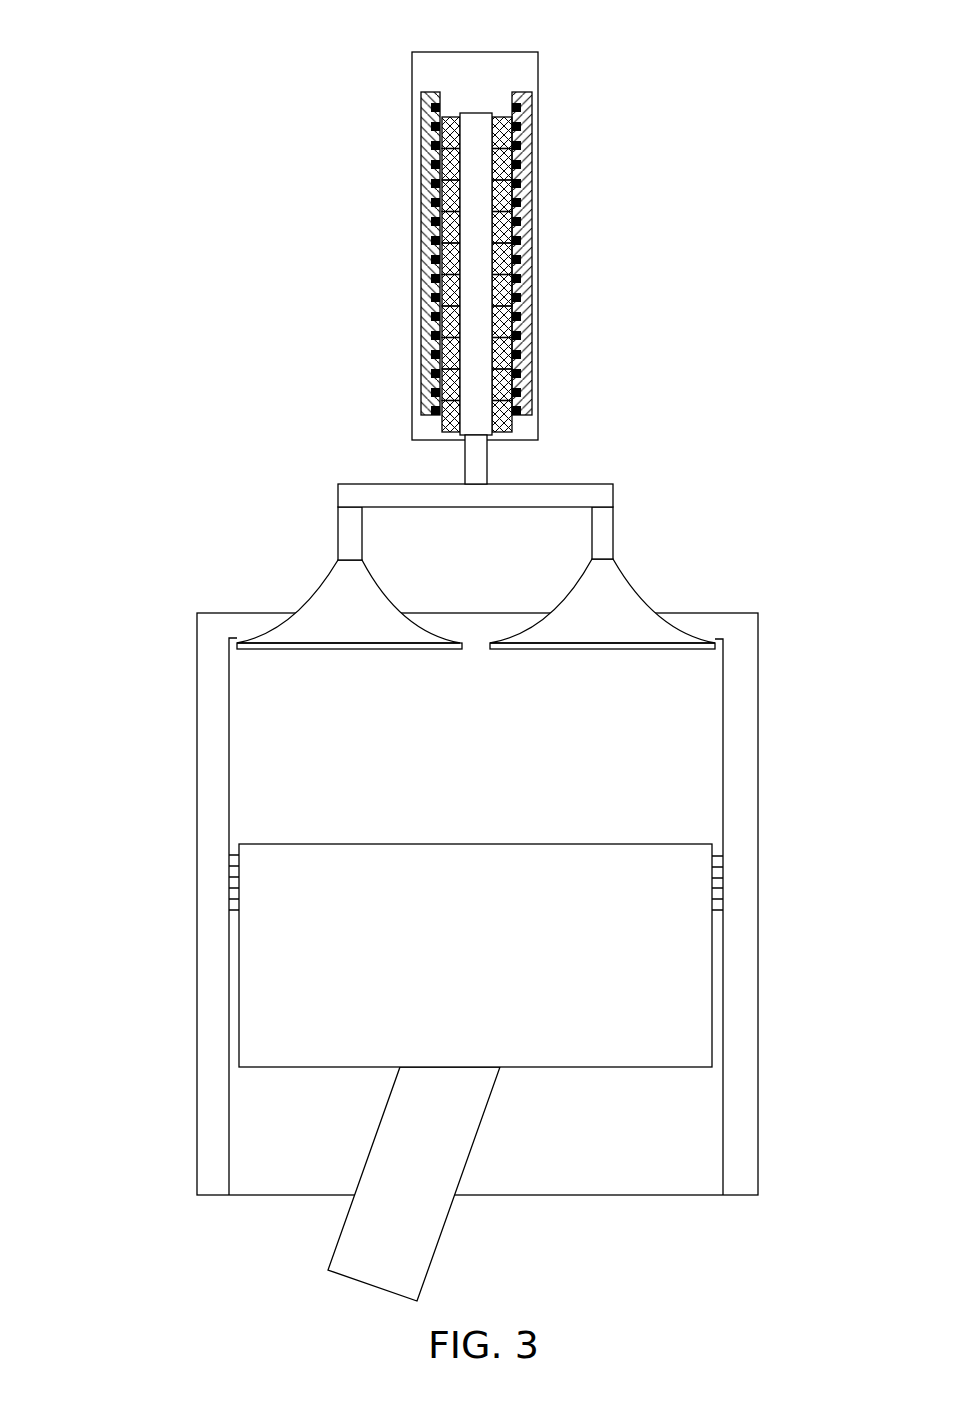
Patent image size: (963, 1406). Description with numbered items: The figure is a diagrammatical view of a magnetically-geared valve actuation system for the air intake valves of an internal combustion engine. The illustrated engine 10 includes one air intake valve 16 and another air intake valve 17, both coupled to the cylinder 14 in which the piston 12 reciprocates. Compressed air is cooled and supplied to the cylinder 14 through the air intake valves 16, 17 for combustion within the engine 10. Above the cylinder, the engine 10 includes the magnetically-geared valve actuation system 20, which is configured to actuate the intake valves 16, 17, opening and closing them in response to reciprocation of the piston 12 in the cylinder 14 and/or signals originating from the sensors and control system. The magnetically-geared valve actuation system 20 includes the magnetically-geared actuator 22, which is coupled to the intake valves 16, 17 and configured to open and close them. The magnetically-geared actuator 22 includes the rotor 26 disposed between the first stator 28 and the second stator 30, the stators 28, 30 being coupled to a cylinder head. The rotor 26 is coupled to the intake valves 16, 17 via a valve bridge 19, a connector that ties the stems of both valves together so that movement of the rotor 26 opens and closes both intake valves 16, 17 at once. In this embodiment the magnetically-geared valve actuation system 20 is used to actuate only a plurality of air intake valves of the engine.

The engine 10 is at (122, 42).
The piston 12 is at (483, 848).
The cylinder 14 is at (200, 775).
The air intake valve 16 is at (318, 605).
The air intake valve 17 is at (624, 607).
The valve bridge 19 is at (569, 488).
The magnetically-geared valve actuation system 20 is at (483, 243).
The magnetically-geared actuator 22 is at (410, 178).
The rotor 26 is at (477, 93).
The first stator 28 is at (431, 93).
The second stator 30 is at (522, 93).